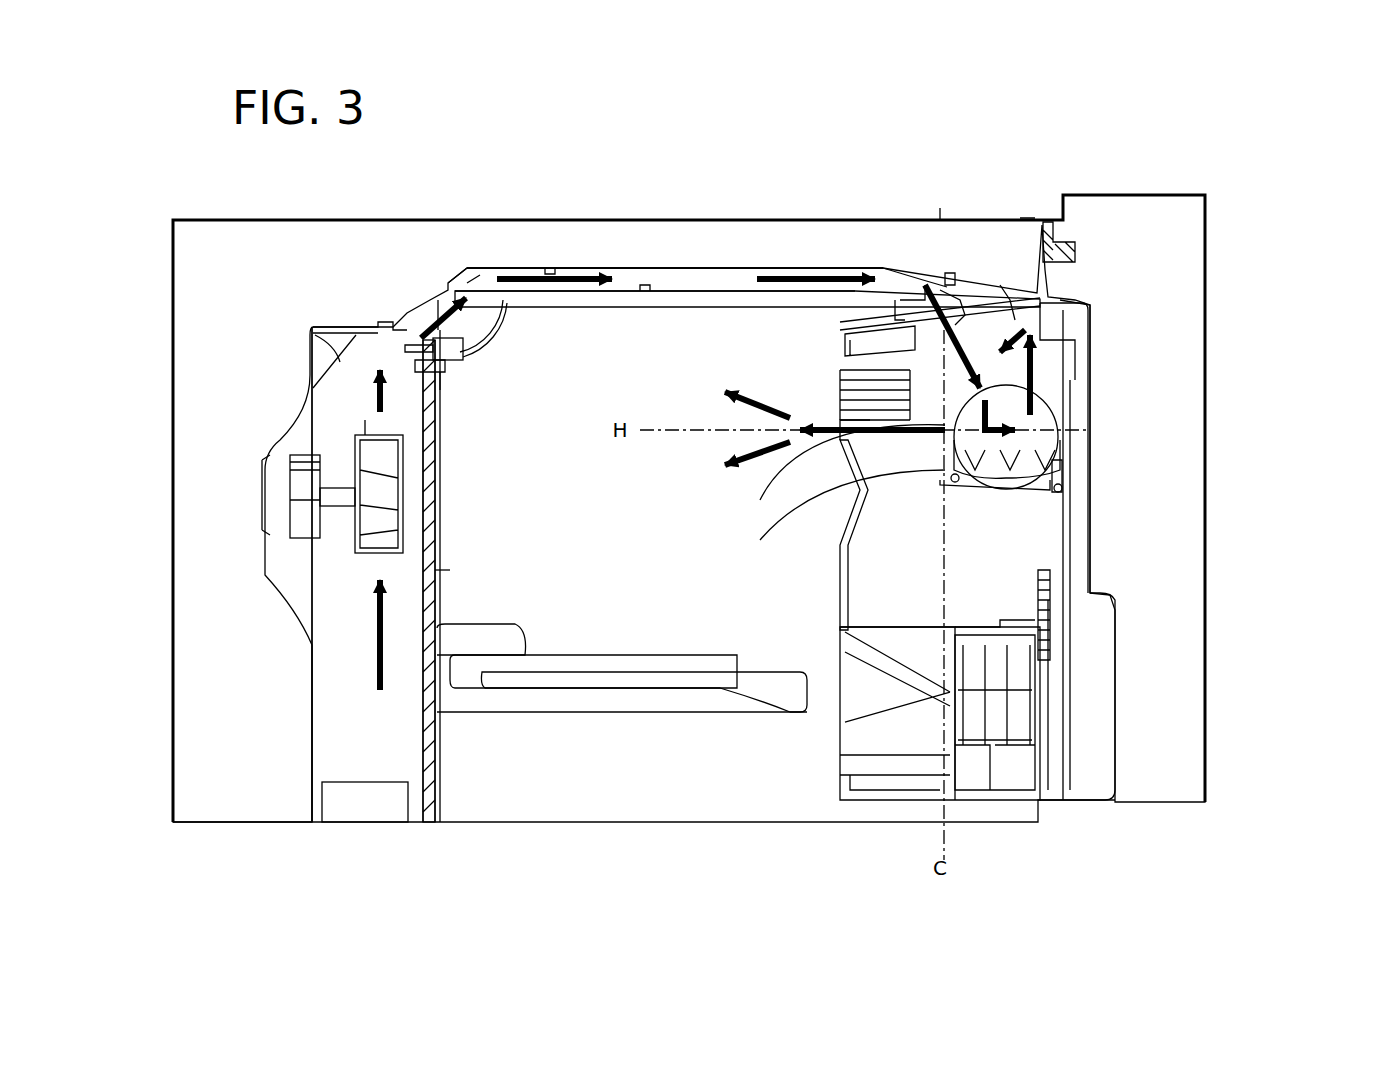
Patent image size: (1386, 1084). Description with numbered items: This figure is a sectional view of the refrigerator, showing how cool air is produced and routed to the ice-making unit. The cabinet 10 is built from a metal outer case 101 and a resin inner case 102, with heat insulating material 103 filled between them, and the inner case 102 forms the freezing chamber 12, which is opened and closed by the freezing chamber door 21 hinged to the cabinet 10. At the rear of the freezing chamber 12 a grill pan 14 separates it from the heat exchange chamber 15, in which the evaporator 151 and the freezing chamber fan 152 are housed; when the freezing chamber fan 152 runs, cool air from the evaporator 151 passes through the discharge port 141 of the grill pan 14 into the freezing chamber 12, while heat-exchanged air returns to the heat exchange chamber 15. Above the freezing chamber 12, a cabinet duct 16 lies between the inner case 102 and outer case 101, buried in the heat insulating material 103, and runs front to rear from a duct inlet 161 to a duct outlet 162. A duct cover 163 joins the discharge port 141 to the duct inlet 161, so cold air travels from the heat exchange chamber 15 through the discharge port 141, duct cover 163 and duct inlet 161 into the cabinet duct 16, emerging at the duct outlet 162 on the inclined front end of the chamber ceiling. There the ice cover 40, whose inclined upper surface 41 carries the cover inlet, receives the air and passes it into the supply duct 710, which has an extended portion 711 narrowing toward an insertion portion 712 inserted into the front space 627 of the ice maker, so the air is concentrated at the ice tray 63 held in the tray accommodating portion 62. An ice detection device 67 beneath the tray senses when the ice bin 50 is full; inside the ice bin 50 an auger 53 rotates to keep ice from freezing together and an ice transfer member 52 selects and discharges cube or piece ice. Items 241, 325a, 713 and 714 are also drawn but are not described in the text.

The cabinet 10 is at (843, 215).
The freezing chamber 12 is at (658, 503).
The grill pan 14 is at (436, 780).
The heat exchange chamber 15 is at (360, 754).
The cabinet duct 16 is at (703, 283).
The freezing chamber door 21 is at (1248, 193).
The ice cover 40 is at (835, 341).
The upper surface of the ice cover 41 is at (887, 300).
The ice bin 50 is at (828, 740).
The ice transfer member 52 is at (1068, 672).
The auger 53 is at (1040, 604).
The tray accommodating portion 62 is at (935, 425).
The ice tray 63 is at (1070, 440).
The ice detection device 67 is at (1070, 485).
The outer case 101 is at (748, 220).
The inner case 102 is at (680, 300).
The heat insulating material 103 is at (508, 245).
The discharge port 141 is at (440, 355).
The evaporator 151 is at (360, 800).
The freezing chamber fan 152 is at (288, 492).
The duct inlet 161 is at (470, 283).
The duct outlet 162 is at (960, 300).
The duct cover 163 is at (493, 352).
The discharge port 241 is at (848, 433).
The rear panel 325a is at (1090, 745).
The front space 627 is at (1050, 380).
The supply duct 710 is at (1278, 285).
The extended portion 711 is at (1060, 300).
The insertion portion 712 is at (1065, 330).
The gasket flange 713 is at (1010, 295).
The partition guide 714 is at (870, 435).